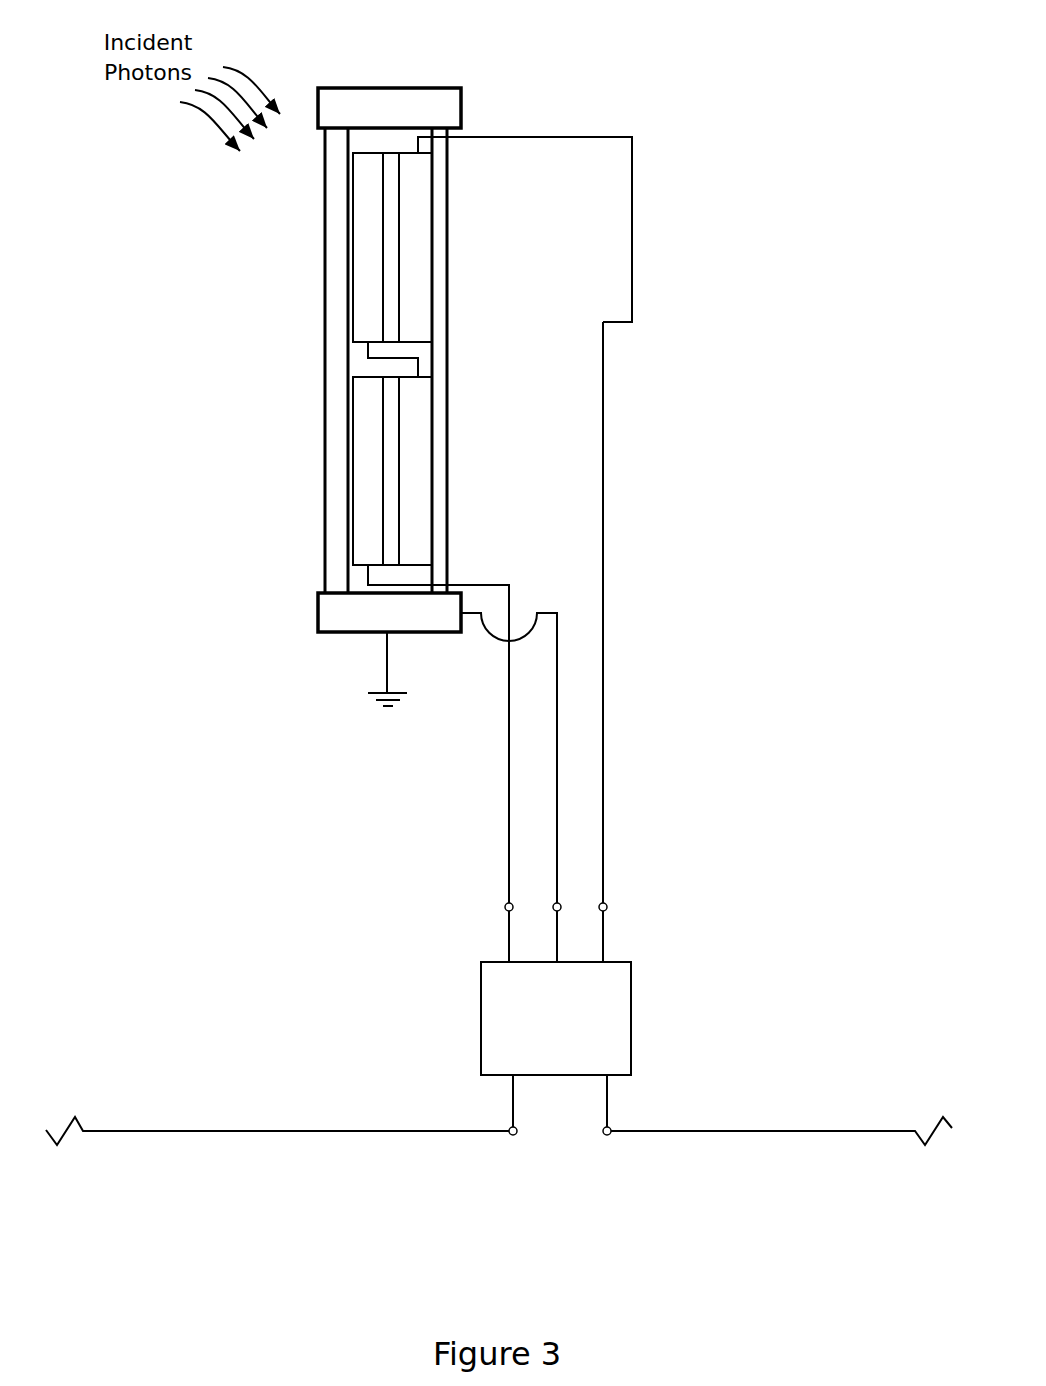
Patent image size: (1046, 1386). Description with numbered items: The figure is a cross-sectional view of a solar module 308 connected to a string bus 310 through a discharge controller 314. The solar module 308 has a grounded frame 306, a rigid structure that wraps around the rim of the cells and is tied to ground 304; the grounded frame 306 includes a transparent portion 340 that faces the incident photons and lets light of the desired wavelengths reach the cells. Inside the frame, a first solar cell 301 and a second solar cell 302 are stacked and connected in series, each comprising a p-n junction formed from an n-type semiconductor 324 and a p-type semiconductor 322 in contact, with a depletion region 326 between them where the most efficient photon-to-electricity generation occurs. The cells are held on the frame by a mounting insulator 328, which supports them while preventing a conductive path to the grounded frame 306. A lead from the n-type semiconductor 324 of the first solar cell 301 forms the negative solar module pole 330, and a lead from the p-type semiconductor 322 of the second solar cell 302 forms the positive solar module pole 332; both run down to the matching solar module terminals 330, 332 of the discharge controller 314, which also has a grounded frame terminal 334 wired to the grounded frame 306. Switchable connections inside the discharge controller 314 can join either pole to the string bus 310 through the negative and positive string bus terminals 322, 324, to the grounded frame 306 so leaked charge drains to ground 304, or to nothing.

The first solar cell 301 is at (344, 412).
The second solar cell 302 is at (437, 325).
The ground 304 is at (387, 660).
The grounded frame 306 is at (282, 670).
The solar module 308 is at (524, 107).
The string bus 310 is at (127, 1130).
The discharge controller 314 is at (556, 1044).
The p-type semiconductor / negative string bus terminal 322 is at (475, 1173).
The n-type semiconductor / positive string bus terminal 324 is at (370, 327).
The depletion region 326 is at (390, 250).
The mounting insulator 328 is at (437, 578).
The negative solar module pole / negative solar module terminal 330 is at (505, 906).
The positive solar module pole / positive solar module terminal 332 is at (607, 906).
The grounded frame terminal 334 is at (560, 910).
The transparent portion 340 is at (343, 253).